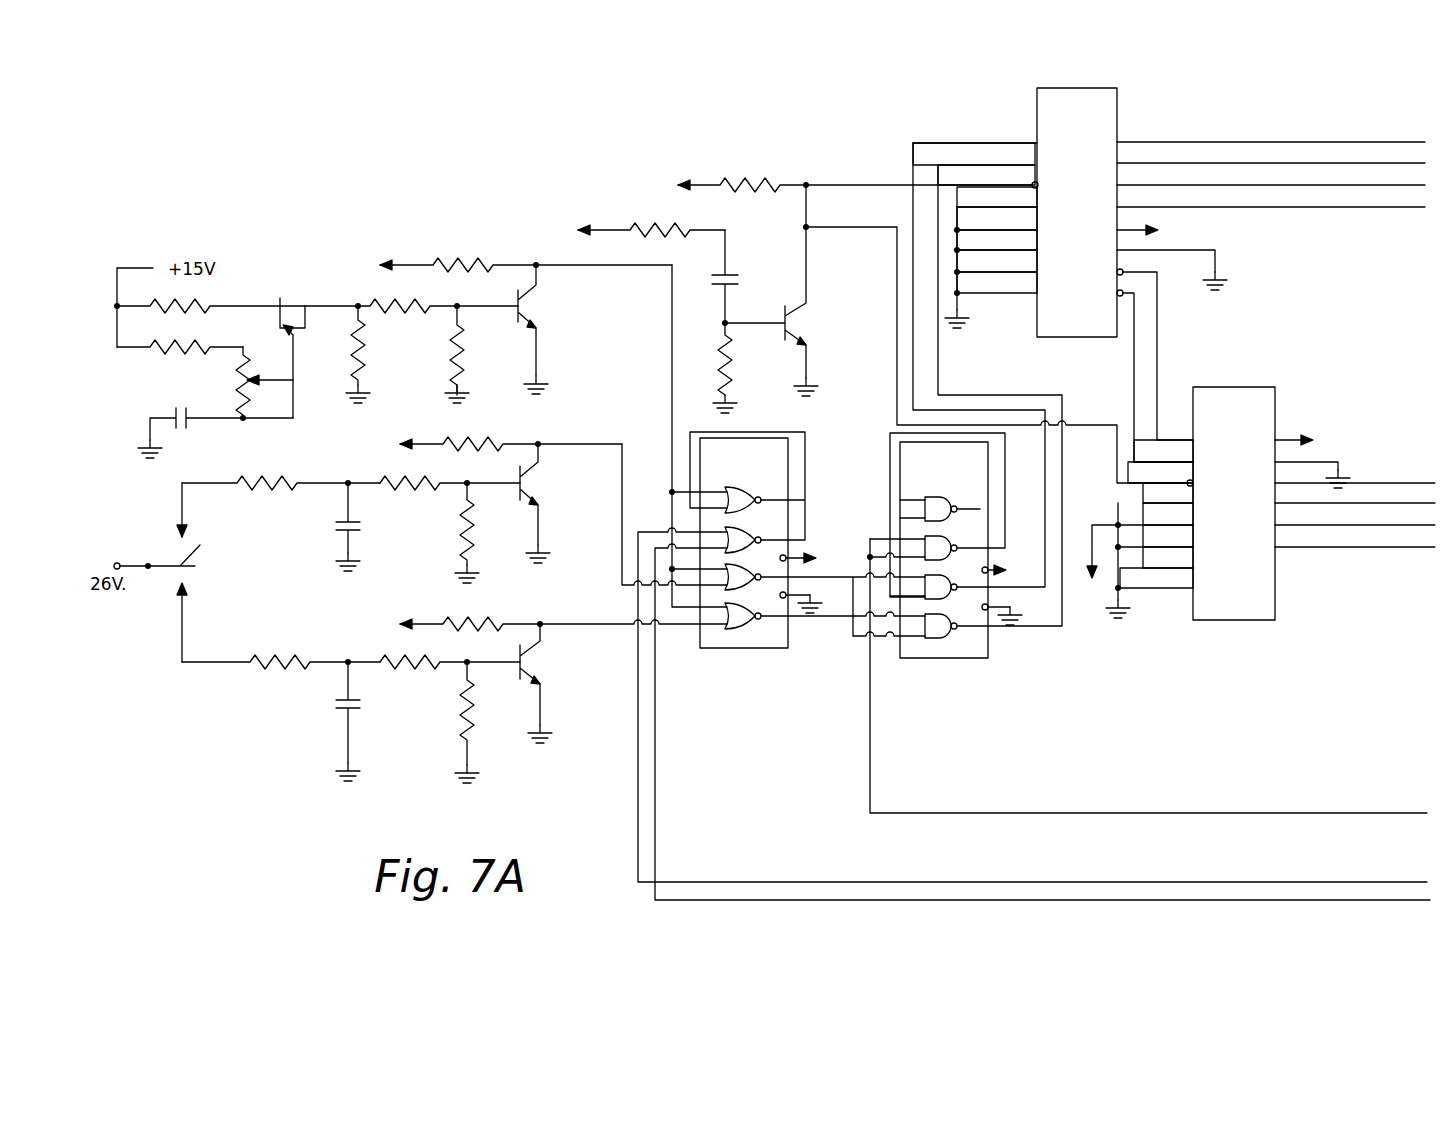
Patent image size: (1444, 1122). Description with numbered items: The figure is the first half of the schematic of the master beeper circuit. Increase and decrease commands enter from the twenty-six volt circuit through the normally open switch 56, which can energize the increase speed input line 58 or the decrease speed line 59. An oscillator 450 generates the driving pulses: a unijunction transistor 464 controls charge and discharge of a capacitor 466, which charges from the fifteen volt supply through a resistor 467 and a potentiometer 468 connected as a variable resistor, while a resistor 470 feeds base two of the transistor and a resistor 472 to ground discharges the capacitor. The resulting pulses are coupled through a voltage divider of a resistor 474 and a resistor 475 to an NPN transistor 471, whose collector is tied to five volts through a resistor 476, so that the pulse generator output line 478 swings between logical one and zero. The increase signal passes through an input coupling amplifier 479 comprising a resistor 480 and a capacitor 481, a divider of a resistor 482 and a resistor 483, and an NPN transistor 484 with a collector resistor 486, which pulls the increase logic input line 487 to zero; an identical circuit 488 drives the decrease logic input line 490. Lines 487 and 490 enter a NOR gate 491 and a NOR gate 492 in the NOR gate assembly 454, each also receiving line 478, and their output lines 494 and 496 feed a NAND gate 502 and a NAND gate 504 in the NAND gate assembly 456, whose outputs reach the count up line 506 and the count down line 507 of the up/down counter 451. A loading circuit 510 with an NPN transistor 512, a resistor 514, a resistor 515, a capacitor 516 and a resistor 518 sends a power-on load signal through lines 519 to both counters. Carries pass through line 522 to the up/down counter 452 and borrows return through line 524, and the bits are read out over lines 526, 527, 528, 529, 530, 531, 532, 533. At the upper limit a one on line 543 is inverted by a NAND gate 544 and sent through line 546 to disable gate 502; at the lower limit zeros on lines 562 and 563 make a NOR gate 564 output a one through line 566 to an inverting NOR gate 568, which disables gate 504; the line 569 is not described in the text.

The normally open switch 56 is at (185, 564).
The increase speed input line 58 is at (182, 513).
The decrease speed line 59 is at (182, 618).
The oscillator 450 is at (340, 251).
The up/down counter 451 is at (1108, 103).
The up/down counter 452 is at (1255, 390).
The quadruple two-input positive NOR gate assembly 454 is at (702, 450).
The quadruple two-input positive NAND gate assembly 456 is at (905, 470).
The unijunction transistor 464 is at (292, 302).
The capacitor 466 is at (186, 420).
The resistor 467 is at (165, 352).
The potentiometer 468 is at (237, 380).
The resistor 470 is at (185, 302).
The NPN transistor 471 is at (545, 298).
The resistor 472 is at (368, 347).
The resistor 474 is at (395, 300).
The resistor 475 is at (470, 345).
The resistor 476 is at (465, 263).
The pulse generator output line 478 is at (670, 372).
The input coupling amplifier 479 is at (320, 465).
The resistor 480 is at (273, 490).
The capacitor 481 is at (338, 530).
The resistor 482 is at (437, 487).
The resistor 483 is at (460, 525).
The NPN transistor 484 is at (545, 478).
The resistor 486 is at (470, 442).
The increase logic input line 487 is at (622, 537).
The circuit 488 is at (287, 678).
The decrease logic input line 490 is at (608, 624).
The NOR gate 491 is at (735, 585).
The NOR gate 492 is at (740, 628).
The output line 494 is at (838, 577).
The output line 496 is at (848, 620).
The NAND gate 502 is at (940, 590).
The NAND gate 504 is at (948, 630).
The count up line 506 is at (913, 175).
The count down line 507 is at (938, 240).
The loading circuit 510 is at (637, 183).
The NPN transistor 512 is at (800, 318).
The resistor 514 is at (757, 180).
The resistor 515 is at (688, 230).
The capacitor 516 is at (735, 280).
The resistor 518 is at (735, 365).
The lines 519 is at (823, 187).
The line 522 is at (1157, 377).
The line 524 is at (1134, 385).
The line 526 is at (1200, 142).
The line 527 is at (1290, 163).
The line 528 is at (1270, 186).
The line 529 is at (1355, 207).
The line 530 is at (1365, 483).
The line 531 is at (1380, 503).
The line 532 is at (1313, 527).
The line 533 is at (1403, 548).
The output line 543 is at (1310, 813).
The NAND gate 544 is at (945, 548).
The line 546 is at (888, 451).
The line 562 is at (1355, 900).
The line 563 is at (1325, 882).
The NOR gate 564 is at (745, 537).
The line 566 is at (748, 435).
The NOR gate 568 is at (672, 493).
The line 569 is at (815, 502).